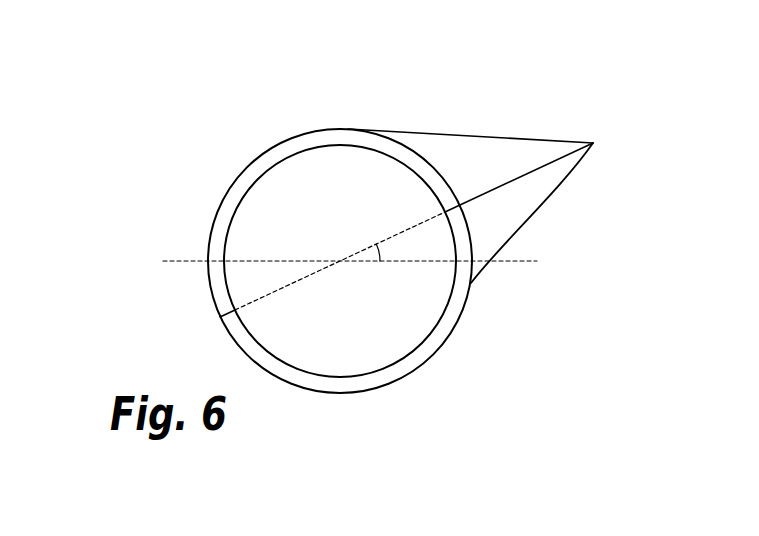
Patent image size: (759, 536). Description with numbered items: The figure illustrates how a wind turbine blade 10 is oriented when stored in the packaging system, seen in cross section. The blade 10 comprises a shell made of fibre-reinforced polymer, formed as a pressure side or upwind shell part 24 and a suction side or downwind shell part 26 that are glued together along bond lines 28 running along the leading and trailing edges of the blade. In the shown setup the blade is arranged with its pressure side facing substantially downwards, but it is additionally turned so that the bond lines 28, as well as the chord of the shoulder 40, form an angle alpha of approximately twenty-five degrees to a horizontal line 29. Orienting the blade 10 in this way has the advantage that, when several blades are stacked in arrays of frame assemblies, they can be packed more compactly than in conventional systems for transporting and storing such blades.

The wind turbine blade 10 is at (391, 105).
The pressure side shell part 24 is at (443, 328).
The suction side shell part 26 is at (343, 138).
The bond lines 28 is at (442, 190).
The horizontal line 29 is at (537, 261).
The shoulder 40 is at (593, 143).